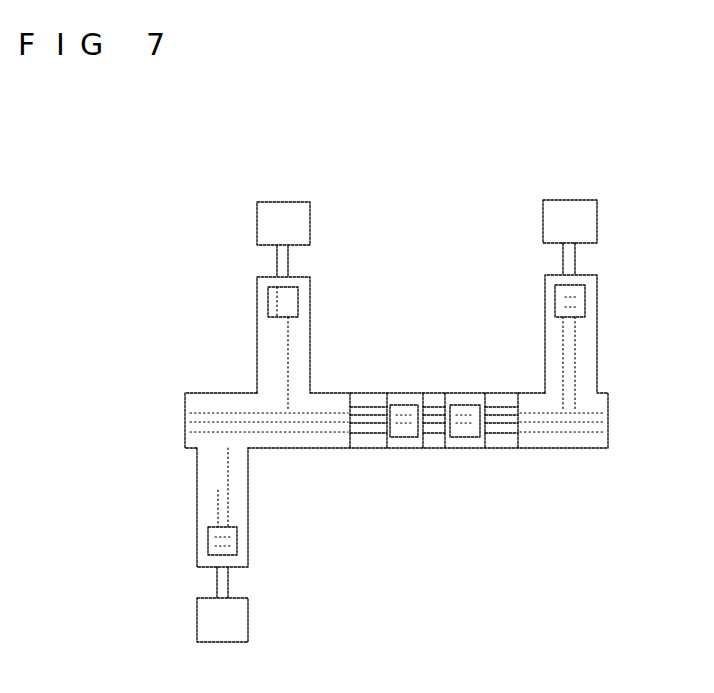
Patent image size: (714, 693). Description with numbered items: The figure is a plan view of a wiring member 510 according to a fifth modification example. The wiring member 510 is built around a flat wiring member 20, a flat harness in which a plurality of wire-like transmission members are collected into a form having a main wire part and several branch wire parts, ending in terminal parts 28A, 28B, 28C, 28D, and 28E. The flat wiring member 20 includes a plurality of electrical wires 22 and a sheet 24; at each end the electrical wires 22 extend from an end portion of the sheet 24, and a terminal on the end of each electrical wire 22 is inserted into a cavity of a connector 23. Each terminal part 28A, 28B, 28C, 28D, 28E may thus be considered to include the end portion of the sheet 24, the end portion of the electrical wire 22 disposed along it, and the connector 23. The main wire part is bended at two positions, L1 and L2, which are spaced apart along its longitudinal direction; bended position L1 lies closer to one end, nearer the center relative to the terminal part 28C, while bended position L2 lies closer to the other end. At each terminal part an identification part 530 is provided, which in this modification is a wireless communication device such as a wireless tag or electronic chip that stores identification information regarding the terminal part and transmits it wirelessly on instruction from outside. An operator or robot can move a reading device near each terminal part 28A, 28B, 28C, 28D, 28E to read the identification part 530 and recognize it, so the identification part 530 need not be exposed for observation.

The wiring member 510 is at (456, 212).
The flat wiring member 20 is at (366, 448).
The electrical wire 22 is at (230, 574).
The connector 23 is at (290, 202).
The sheet 24 is at (290, 330).
The terminal part 28A is at (340, 393).
The terminal part 28B is at (310, 290).
The terminal part 28C is at (250, 540).
The terminal part 28D is at (597, 285).
The terminal part 28E is at (535, 448).
The identification part 530 is at (268, 300).
The bended position L1 is at (185, 410).
The bended position L2 is at (608, 400).